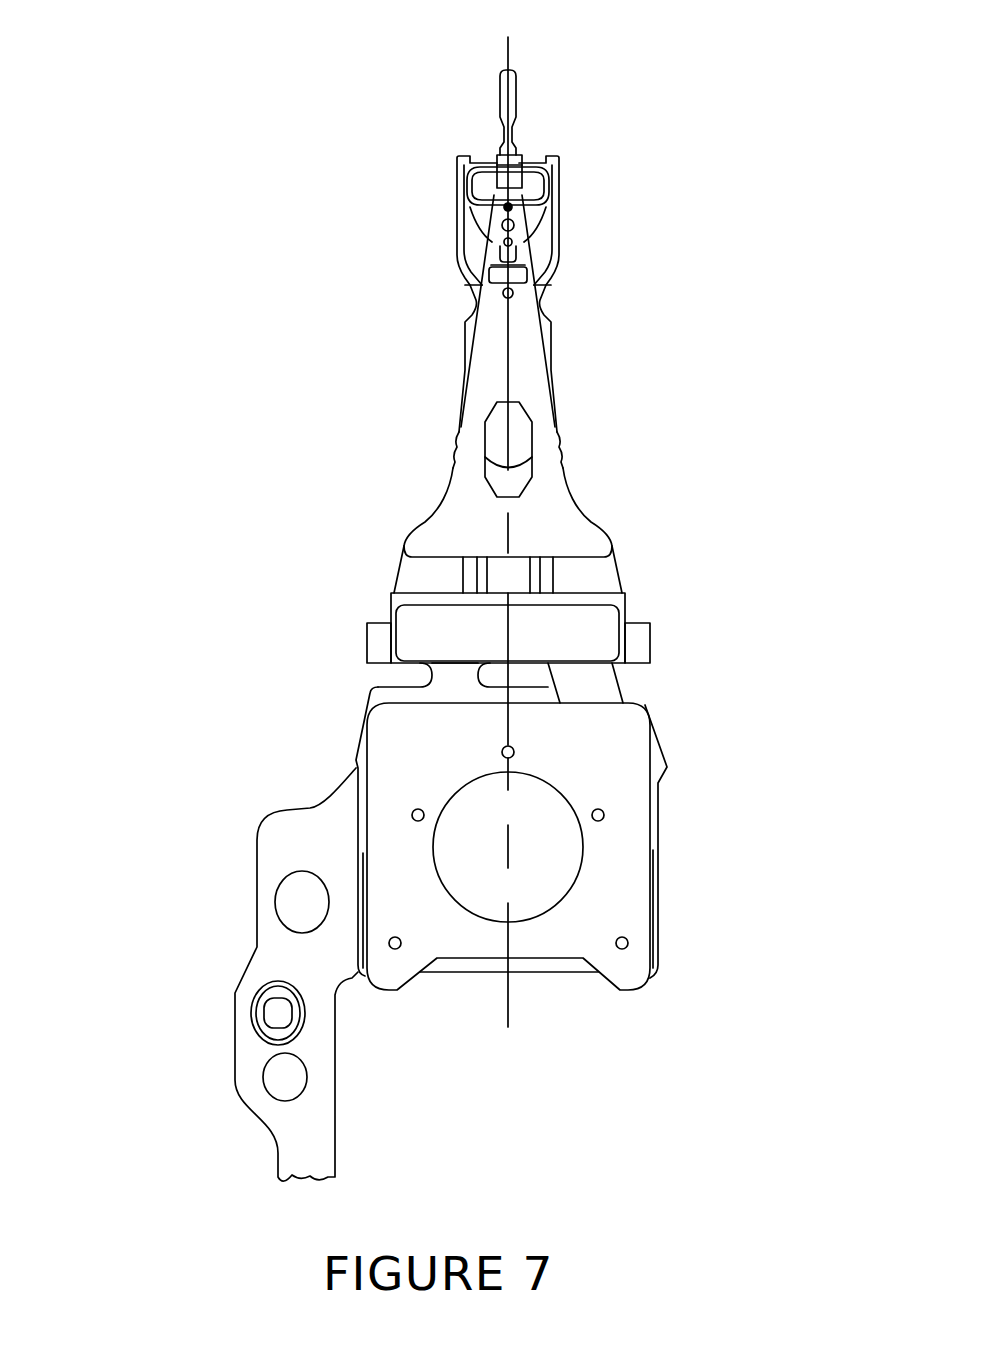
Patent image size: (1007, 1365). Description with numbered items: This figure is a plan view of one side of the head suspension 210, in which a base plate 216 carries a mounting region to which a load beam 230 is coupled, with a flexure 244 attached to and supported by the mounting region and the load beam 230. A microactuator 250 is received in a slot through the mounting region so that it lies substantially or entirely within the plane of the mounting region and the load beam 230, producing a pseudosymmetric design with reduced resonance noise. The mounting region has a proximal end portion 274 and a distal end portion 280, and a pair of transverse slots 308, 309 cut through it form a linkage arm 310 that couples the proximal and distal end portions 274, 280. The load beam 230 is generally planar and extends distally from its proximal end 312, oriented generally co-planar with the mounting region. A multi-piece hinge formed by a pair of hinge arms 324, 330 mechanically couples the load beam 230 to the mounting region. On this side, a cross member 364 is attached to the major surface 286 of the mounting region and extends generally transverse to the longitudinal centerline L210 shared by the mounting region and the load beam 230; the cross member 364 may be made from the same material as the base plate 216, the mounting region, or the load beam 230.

The longitudinal centerline L210 is at (512, 515).
The head suspension 210 is at (159, 1078).
The base plate 216 is at (656, 903).
The load beam 230 is at (573, 443).
The flexure 244 is at (560, 323).
The microactuator 250 is at (620, 679).
The proximal end portion 274 is at (547, 980).
The distal end portion 280 is at (390, 655).
The major surface 286 is at (382, 693).
The transverse slot 308 is at (402, 678).
The transverse slot 309 is at (527, 675).
The linkage arm 310 is at (452, 685).
The proximal end 312 is at (432, 518).
The hinge arm 324 is at (400, 562).
The hinge arm 330 is at (622, 590).
The cross member 364 is at (405, 618).